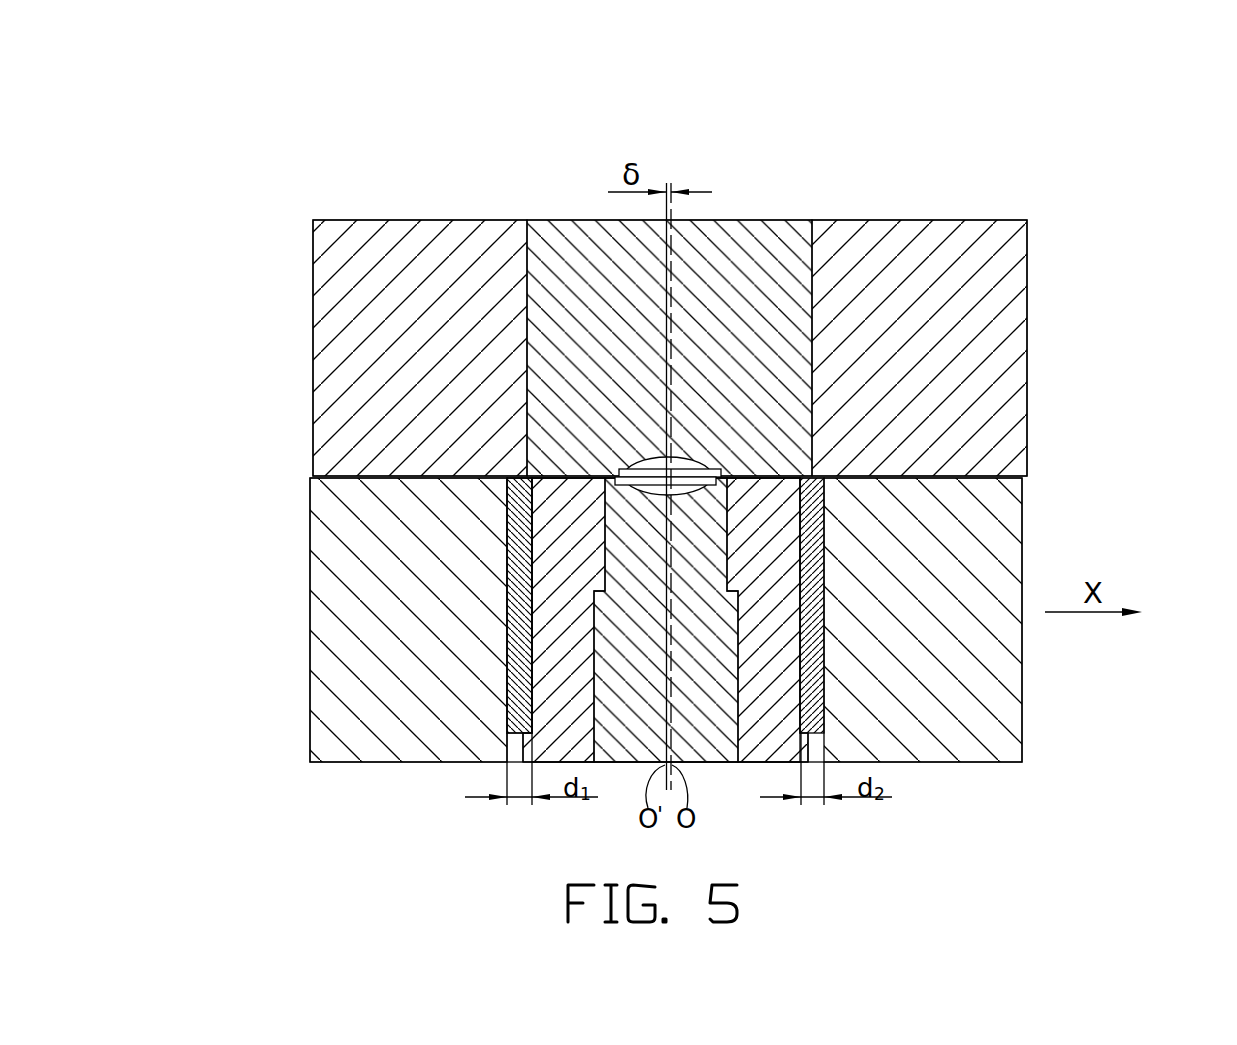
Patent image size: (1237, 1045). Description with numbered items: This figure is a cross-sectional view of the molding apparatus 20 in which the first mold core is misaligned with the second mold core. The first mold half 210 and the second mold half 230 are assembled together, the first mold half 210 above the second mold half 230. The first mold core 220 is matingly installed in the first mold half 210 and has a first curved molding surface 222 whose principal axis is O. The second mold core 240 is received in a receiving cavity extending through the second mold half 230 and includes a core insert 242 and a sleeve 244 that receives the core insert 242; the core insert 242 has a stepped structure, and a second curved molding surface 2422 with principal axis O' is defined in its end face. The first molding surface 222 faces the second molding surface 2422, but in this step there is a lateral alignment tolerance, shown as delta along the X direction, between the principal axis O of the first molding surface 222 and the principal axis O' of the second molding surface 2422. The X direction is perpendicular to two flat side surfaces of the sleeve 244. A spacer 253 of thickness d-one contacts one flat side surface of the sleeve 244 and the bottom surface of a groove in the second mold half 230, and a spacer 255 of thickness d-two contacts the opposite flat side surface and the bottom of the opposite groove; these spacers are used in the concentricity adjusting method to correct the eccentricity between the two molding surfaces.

The molding apparatus 20 is at (680, 70).
The first mold half 210 is at (990, 337).
The first mold core 220 is at (760, 282).
The first molding surface 222 is at (647, 458).
The second mold half 230 is at (957, 728).
The second mold core 240 is at (1127, 497).
The core insert 242 is at (795, 583).
The second molding surface 2422 is at (643, 496).
The sleeve 244 is at (713, 635).
The spacer 253 is at (512, 688).
The spacer 255 is at (820, 700).